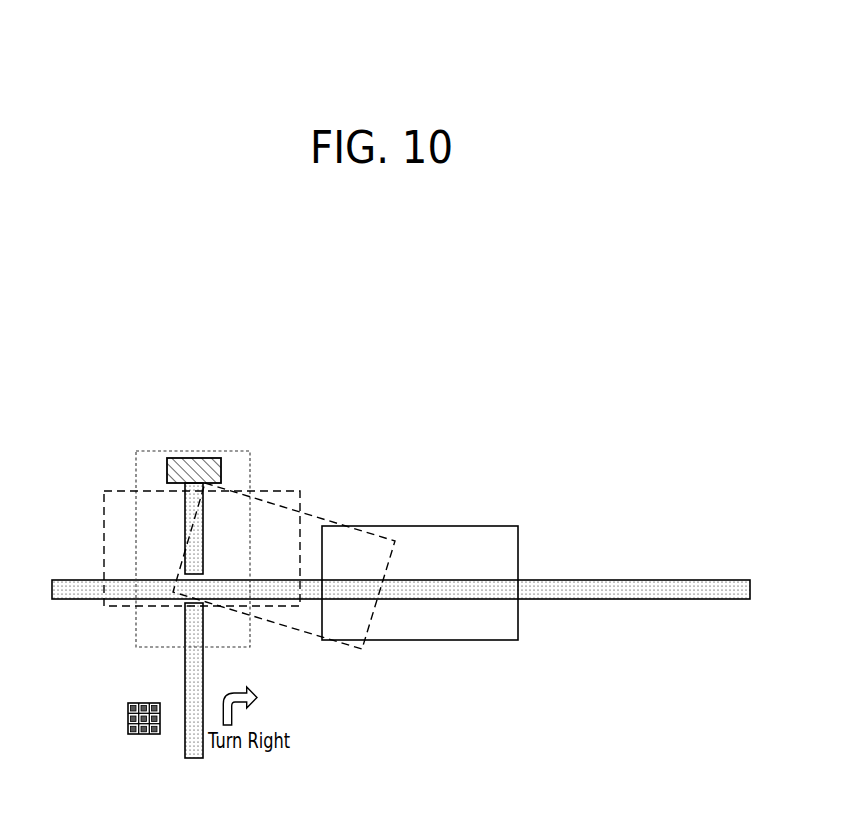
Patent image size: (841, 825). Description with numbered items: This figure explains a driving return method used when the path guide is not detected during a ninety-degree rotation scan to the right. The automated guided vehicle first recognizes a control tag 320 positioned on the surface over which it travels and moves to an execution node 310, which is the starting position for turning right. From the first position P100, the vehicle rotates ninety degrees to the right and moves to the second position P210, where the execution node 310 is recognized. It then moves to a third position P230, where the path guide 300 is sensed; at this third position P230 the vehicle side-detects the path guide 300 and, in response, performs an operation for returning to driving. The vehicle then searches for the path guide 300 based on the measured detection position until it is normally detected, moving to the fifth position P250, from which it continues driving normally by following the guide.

The path guide 300 is at (648, 580).
The execution node 310 is at (193, 458).
The control tag 320 is at (128, 712).
The first position P100 is at (136, 465).
The second position P210 is at (104, 535).
The third position P230 is at (292, 630).
The fifth position P250 is at (455, 526).